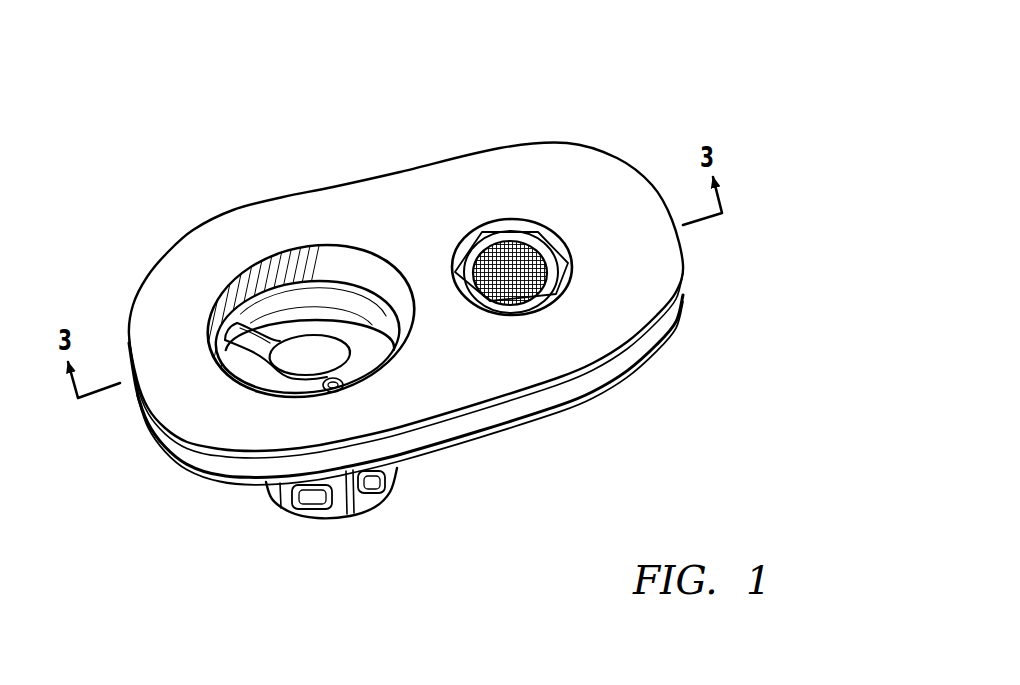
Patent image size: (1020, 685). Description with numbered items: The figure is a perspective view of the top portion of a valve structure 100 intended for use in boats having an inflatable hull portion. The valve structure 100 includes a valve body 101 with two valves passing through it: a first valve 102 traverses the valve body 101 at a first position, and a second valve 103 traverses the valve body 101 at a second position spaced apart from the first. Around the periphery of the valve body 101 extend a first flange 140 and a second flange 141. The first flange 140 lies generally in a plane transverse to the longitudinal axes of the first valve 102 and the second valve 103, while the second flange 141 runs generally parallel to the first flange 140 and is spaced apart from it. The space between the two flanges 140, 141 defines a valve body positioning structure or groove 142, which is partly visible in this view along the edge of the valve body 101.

The valve structure 100 is at (625, 45).
The valve body 101 is at (418, 250).
The first valve 102 is at (320, 274).
The second valve 103 is at (509, 226).
The first flange 140 is at (624, 367).
The second flange 141 is at (627, 172).
The valve body positioning structure or groove 142 is at (231, 459).